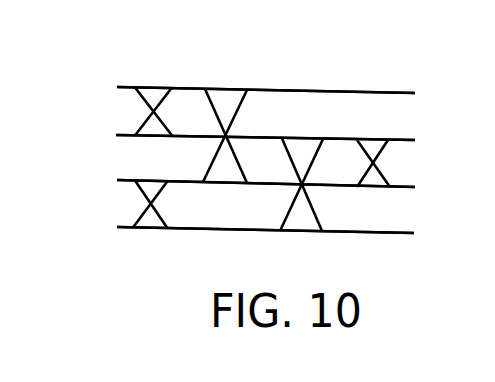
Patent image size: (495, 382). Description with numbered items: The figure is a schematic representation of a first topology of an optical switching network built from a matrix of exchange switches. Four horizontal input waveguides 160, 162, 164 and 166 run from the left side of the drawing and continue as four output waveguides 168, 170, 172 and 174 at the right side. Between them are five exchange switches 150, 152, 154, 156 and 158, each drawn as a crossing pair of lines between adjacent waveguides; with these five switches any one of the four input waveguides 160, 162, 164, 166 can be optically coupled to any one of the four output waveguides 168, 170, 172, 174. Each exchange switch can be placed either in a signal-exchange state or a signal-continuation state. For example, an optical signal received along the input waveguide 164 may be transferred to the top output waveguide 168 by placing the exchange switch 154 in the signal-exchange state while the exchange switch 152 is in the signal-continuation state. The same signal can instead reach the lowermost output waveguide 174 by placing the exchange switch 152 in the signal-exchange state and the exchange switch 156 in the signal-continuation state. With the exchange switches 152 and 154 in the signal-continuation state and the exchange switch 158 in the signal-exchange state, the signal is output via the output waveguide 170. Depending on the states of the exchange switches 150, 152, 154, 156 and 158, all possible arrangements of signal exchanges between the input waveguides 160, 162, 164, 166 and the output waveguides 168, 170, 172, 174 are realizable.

The exchange switch 150 is at (149, 97).
The exchange switch 152 is at (161, 228).
The exchange switch 154 is at (215, 106).
The exchange switch 156 is at (285, 216).
The exchange switch 158 is at (366, 174).
The input waveguide 160 is at (118, 87).
The input waveguide 162 is at (117, 135).
The input waveguide 164 is at (118, 180).
The input waveguide 166 is at (118, 227).
The output waveguide 168 is at (415, 93).
The output waveguide 170 is at (415, 140).
The output waveguide 172 is at (415, 187).
The output waveguide 174 is at (414, 233).